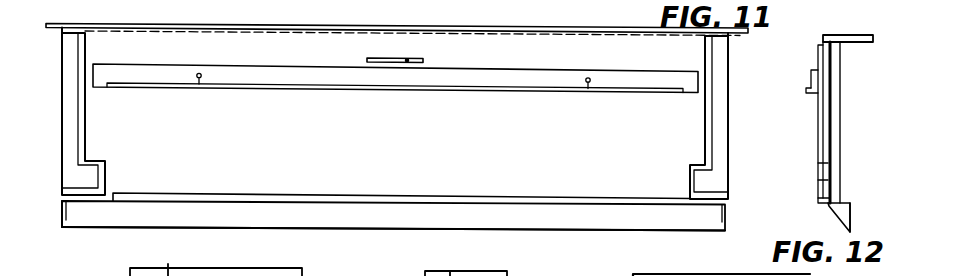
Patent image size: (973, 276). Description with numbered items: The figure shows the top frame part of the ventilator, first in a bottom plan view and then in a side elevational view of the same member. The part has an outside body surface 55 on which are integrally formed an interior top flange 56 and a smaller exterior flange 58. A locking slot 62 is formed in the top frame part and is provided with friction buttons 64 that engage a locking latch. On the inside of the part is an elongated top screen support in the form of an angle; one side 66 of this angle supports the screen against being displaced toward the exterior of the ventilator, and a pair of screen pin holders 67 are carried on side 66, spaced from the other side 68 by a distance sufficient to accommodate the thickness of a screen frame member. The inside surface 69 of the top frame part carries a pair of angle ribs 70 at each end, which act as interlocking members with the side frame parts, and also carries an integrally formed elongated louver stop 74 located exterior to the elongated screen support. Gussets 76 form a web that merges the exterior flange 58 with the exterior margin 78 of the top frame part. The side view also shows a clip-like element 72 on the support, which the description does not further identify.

In FIG. 12, the outside body surface 55 is at (832, 140).
In FIG. 11, the interior top flange 56 is at (153, 23).
In FIG. 12, the interior top flange 56 is at (872, 33).
In FIG. 12, the exterior flange 58 is at (830, 209).
In FIG. 11, the locking slot 62 is at (426, 64).
In FIG. 11, the friction buttons 64 is at (385, 57).
In FIG. 12, the side of screen support 66 is at (817, 68).
In FIG. 11, the screen pin holders 67 is at (197, 82).
In FIG. 12, the screen pin holders 67 is at (815, 73).
In FIG. 11, the side of screen support 68 is at (518, 91).
In FIG. 12, the side of screen support 68 is at (812, 94).
In FIG. 11, the inside surface 69 is at (383, 173).
In FIG. 11, the angle ribs 70 is at (85, 125).
In FIG. 12, the angle ribs 70 is at (818, 130).
In FIG. 12, the clip 72 is at (818, 170).
In FIG. 11, the louver stop 74 is at (447, 203).
In FIG. 12, the louver stop 74 is at (828, 200).
In FIG. 11, the gussets 76 is at (60, 206).
In FIG. 12, the gussets 76 is at (858, 231).
In FIG. 11, the exterior margin 78 is at (95, 215).